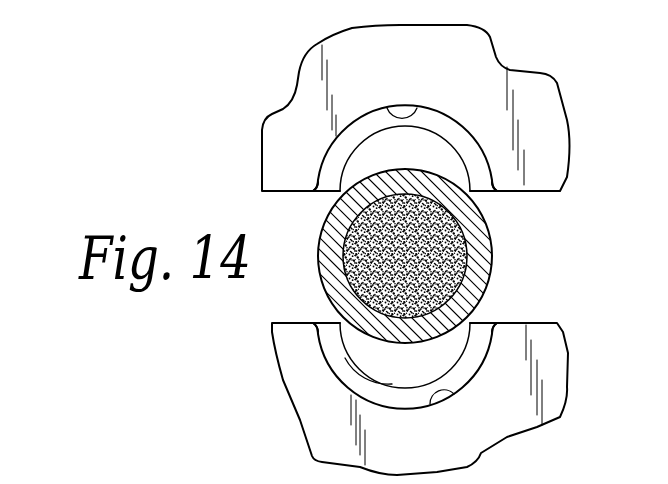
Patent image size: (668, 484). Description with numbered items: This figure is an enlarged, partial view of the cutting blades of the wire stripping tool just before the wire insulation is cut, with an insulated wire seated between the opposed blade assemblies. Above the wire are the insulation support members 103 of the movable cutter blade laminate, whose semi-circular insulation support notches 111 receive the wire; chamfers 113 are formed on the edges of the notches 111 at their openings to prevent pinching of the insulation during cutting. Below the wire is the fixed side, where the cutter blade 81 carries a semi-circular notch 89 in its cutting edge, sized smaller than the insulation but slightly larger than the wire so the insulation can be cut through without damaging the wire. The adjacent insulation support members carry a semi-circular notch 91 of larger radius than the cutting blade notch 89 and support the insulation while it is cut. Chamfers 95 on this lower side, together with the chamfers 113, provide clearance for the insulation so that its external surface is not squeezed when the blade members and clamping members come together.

The insulation support members 103 is at (567, 66).
The cutter blade 81 is at (578, 325).
The insulation support notches 111 is at (418, 107).
The chamfers 113 is at (314, 192).
The chamfers 95 is at (315, 322).
The semi-circular notches 89 is at (352, 365).
The semi-circular notches 91 is at (437, 392).